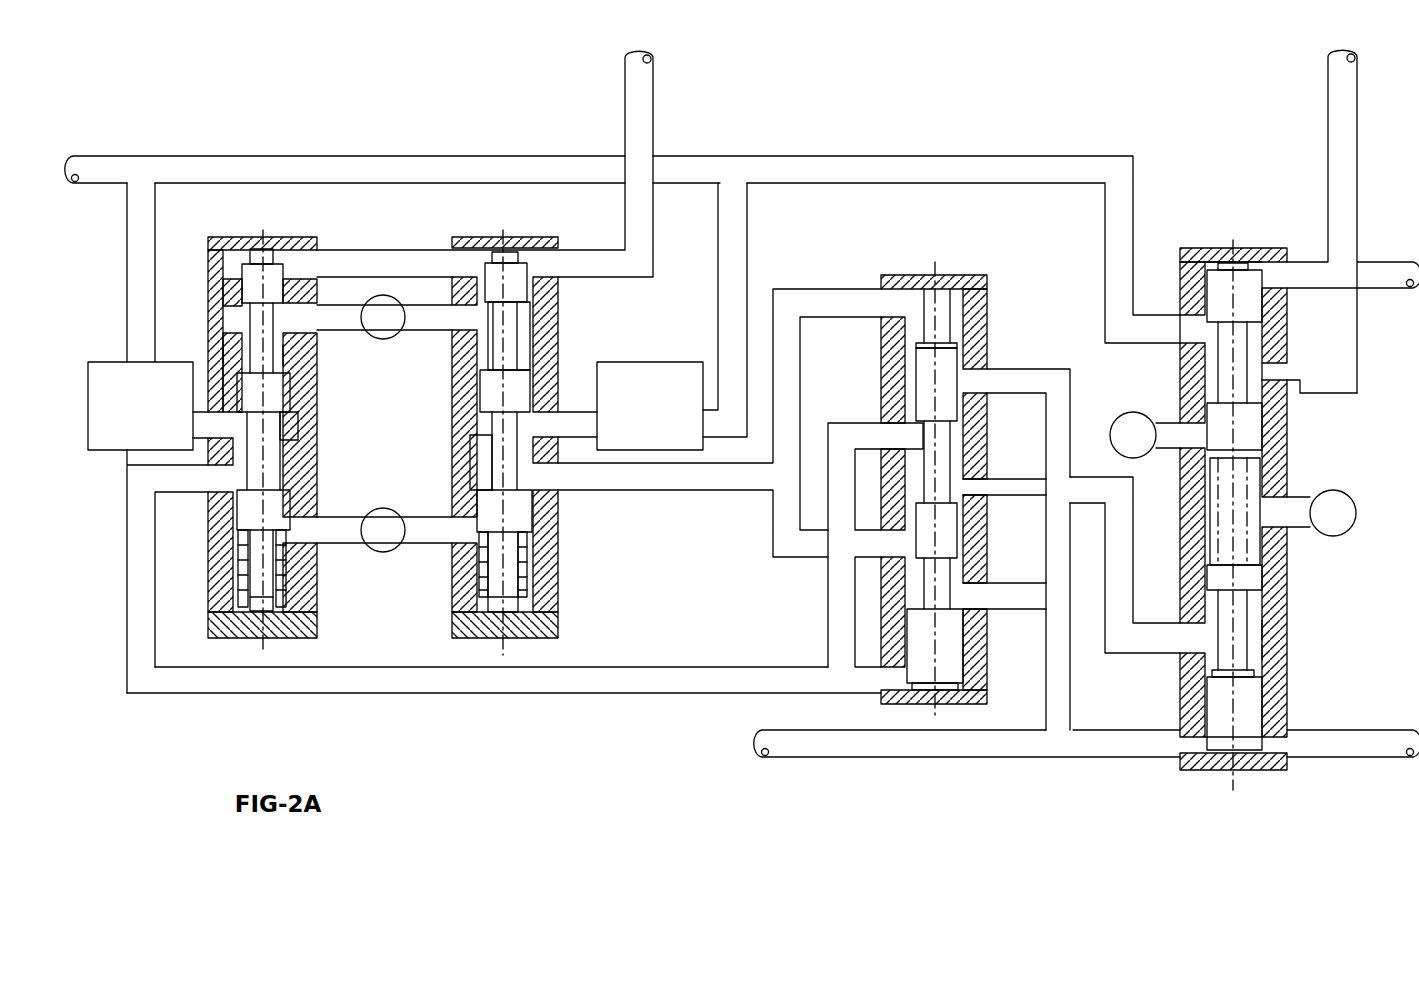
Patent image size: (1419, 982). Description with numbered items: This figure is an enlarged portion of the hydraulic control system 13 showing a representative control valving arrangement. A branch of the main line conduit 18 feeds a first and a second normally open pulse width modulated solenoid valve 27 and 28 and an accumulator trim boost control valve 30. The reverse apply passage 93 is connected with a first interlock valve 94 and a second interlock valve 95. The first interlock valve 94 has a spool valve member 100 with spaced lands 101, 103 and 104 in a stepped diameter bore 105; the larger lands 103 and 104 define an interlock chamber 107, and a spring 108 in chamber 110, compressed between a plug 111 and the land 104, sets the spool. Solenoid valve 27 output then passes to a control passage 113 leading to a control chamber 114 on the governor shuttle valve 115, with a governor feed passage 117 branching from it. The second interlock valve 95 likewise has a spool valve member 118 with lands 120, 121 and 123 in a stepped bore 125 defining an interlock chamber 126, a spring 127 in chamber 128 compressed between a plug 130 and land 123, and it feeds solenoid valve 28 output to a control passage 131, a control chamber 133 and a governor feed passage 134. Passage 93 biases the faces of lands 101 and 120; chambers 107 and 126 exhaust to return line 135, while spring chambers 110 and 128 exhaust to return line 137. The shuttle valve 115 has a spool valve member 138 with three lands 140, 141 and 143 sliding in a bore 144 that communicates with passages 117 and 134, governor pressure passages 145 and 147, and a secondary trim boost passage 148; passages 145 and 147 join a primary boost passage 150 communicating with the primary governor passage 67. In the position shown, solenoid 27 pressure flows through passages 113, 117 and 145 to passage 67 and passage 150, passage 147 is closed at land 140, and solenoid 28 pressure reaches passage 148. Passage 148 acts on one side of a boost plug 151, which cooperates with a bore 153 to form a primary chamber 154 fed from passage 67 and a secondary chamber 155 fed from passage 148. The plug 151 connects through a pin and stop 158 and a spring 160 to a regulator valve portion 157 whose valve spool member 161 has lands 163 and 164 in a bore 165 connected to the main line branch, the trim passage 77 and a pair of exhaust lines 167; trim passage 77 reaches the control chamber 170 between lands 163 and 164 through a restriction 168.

The control system 13 is at (592, 735).
The main line conduit 18 is at (272, 163).
The first normally open pulse width modulated solenoid valve 27 is at (666, 418).
The second normally open pulse width modulated solenoid valve 28 is at (154, 418).
The accumulator trim boost control valve 30 is at (1320, 478).
The primary governor passage 67 is at (840, 750).
The trim passage 77 is at (1338, 113).
The reverse apply passage 93 is at (658, 109).
The first interlock valve 94 is at (487, 235).
The second interlock valve 95 is at (247, 235).
The spool valve member 100 is at (513, 330).
The first land 101 is at (522, 265).
The second land 103 is at (490, 384).
The third land 104 is at (525, 502).
The stepped diameter bore 105 is at (493, 401).
The interlock chamber 107 is at (522, 367).
The spring 108 is at (527, 607).
The spring chamber 110 is at (515, 565).
The plug 111 is at (548, 627).
The control passage 113 is at (778, 432).
The control chamber 114 is at (950, 343).
The governor shuttle valve 115 is at (920, 274).
The governor feed passage 117 is at (805, 553).
The spool valve member 118 is at (272, 445).
The first land 120 is at (276, 276).
The second land 121 is at (283, 390).
The third land 123 is at (283, 511).
The stepped diameter bore 125 is at (236, 360).
The interlock chamber 126 is at (284, 355).
The spring 127 is at (287, 607).
The spring chamber 128 is at (280, 573).
The plug 130 is at (305, 625).
The control passage 131 is at (127, 607).
The control chamber 133 is at (967, 700).
The governor feed passage 134 is at (840, 445).
The exhaust line 135 is at (380, 312).
The exhaust line 137 is at (388, 540).
The spool valve member 138 is at (920, 445).
The land 140 is at (920, 360).
The land 141 is at (918, 520).
The land 143 is at (920, 645).
The bore 144 is at (920, 565).
The governor pressure passage 145 is at (1017, 590).
The governor pressure passage 147 is at (1022, 378).
The secondary trim boost passage 148 is at (1017, 482).
The primary boost passage 150 is at (1083, 702).
The boost plug 151 is at (1250, 710).
The bore 153 is at (1262, 642).
The primary chamber 154 is at (1197, 750).
The secondary chamber 155 is at (1263, 630).
The regulator valve portion 157 is at (1213, 246).
The pin and stop 158 is at (1240, 603).
The spring 160 is at (1255, 548).
The valve spool member 161 is at (1245, 338).
The land 163 is at (1245, 282).
The land 164 is at (1248, 428).
The bore 165 is at (1258, 368).
The exhaust line 167 is at (1135, 426).
The restriction 168 is at (1292, 387).
The control chamber 170 is at (1200, 378).